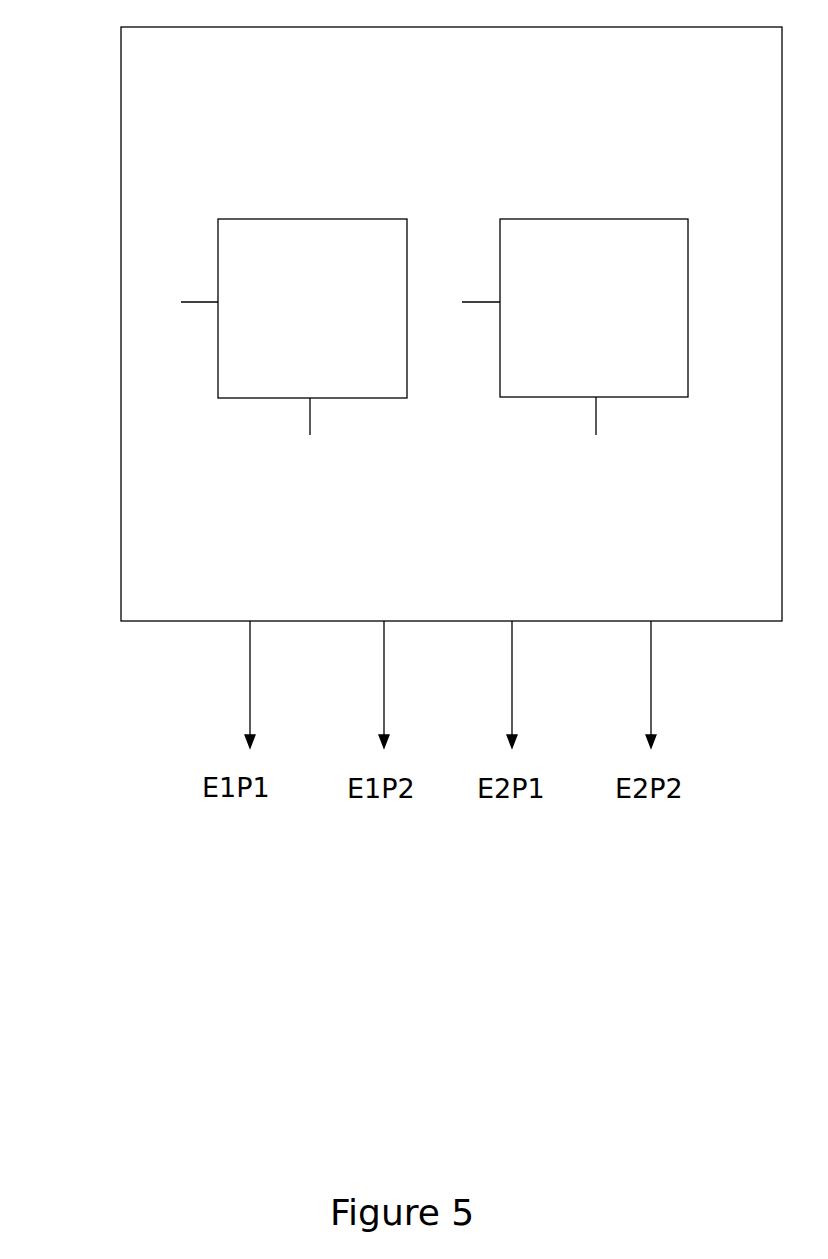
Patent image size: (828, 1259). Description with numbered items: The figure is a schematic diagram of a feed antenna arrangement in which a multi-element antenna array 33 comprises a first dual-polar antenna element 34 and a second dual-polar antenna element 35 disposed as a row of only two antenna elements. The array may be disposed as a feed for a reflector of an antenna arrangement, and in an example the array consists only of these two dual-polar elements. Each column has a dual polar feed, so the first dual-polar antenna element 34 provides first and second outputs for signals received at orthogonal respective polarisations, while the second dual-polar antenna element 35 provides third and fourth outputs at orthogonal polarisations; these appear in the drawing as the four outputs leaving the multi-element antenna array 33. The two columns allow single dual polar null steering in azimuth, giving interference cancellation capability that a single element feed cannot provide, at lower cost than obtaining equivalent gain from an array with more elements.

The multi-element antenna array 33 is at (125, 112).
The first dual-polar antenna element 34 is at (305, 215).
The second dual-polar antenna element 35 is at (595, 219).